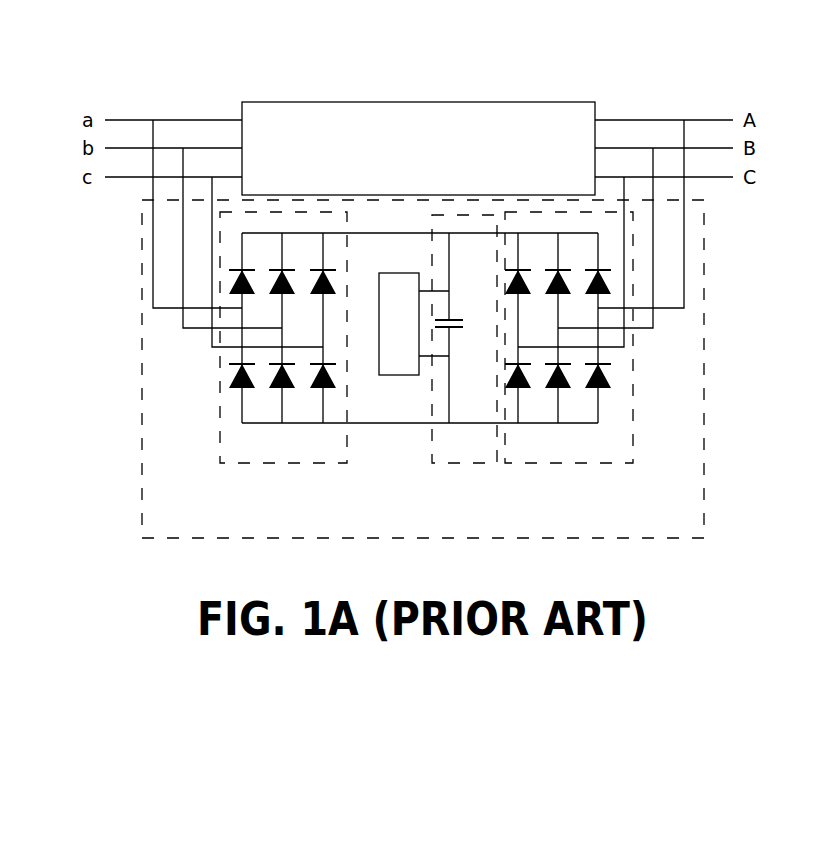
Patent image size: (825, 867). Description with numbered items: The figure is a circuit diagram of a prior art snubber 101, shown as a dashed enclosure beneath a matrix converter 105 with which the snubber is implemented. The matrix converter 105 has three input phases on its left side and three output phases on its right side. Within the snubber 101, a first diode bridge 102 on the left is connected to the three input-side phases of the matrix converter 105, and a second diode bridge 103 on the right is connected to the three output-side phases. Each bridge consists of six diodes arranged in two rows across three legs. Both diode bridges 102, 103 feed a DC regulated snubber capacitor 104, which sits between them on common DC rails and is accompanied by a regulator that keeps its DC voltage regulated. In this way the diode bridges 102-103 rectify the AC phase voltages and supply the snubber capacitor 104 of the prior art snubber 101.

The snubber 101 is at (443, 531).
The diode bridge 102 is at (303, 452).
The diode bridge 103 is at (590, 452).
The DC regulated snubber capacitor 104 is at (483, 455).
The matrix converter 105 is at (594, 102).